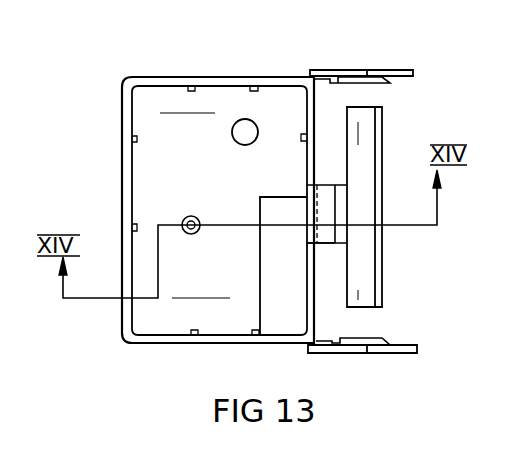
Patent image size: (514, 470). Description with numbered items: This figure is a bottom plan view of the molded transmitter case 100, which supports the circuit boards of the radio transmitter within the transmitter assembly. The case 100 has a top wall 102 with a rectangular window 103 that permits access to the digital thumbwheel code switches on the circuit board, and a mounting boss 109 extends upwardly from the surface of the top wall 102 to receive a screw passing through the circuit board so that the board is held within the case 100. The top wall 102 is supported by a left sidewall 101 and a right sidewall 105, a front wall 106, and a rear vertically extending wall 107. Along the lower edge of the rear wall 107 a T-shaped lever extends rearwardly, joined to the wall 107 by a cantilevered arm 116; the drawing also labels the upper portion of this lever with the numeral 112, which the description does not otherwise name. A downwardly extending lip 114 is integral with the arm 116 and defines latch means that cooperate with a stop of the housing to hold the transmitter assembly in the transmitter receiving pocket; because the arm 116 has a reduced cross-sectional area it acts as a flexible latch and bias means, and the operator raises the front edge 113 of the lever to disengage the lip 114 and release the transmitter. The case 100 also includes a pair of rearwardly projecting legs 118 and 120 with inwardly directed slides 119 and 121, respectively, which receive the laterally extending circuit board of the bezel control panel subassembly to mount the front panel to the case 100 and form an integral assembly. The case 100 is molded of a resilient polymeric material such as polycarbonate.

The case 100 is at (157, 73).
The left sidewall 101 is at (174, 345).
The top wall 102 is at (200, 168).
The rectangular window 103 is at (260, 288).
The right sidewall 105 is at (214, 84).
The front wall 106 is at (126, 160).
The rear vertically extending wall 107 is at (306, 158).
The mounting boss 109 is at (196, 233).
The plate top 112 is at (348, 107).
The front edge 113 is at (383, 272).
The downwardly extending lip 114 is at (323, 243).
The cantilevered arm 116 is at (335, 185).
The rearwardly projecting leg 118 is at (358, 69).
The inwardly directed slide 119 is at (388, 83).
The rearwardly projecting leg 120 is at (382, 353).
The inwardly directed slide 121 is at (385, 340).